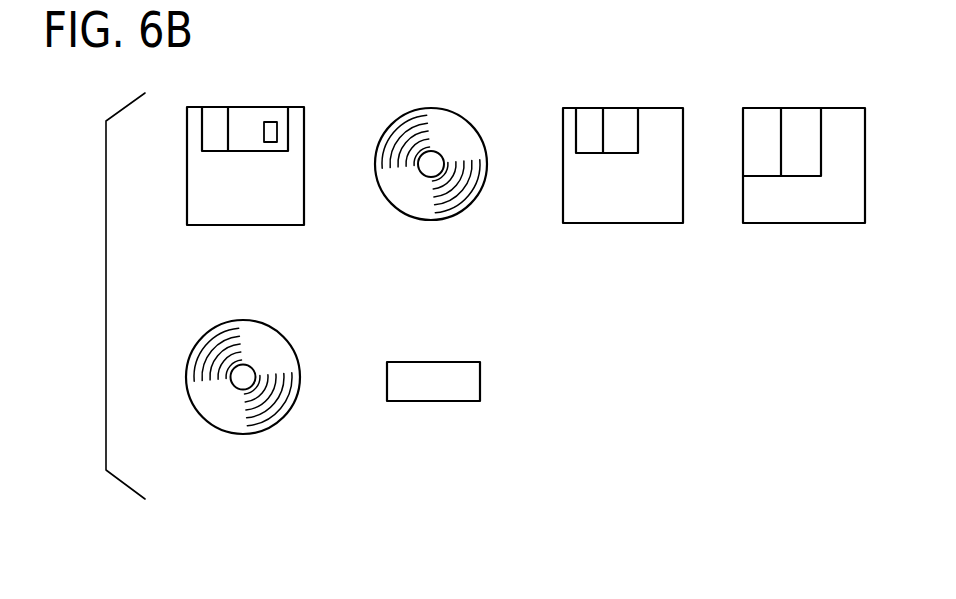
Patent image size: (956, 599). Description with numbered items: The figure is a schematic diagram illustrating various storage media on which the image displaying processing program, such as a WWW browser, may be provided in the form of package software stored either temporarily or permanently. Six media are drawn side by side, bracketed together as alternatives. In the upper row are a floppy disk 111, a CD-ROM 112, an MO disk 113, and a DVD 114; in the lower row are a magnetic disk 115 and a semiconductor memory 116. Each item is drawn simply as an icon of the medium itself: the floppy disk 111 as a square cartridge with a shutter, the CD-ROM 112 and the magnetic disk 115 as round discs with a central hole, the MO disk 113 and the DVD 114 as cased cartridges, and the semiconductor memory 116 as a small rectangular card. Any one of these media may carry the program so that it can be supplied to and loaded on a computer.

The floppy disk 111 is at (245, 225).
The CD-ROM 112 is at (432, 220).
The MO disk 113 is at (622, 223).
The DVD 114 is at (804, 223).
The magnetic disk 115 is at (245, 434).
The semiconductor memory 116 is at (437, 401).